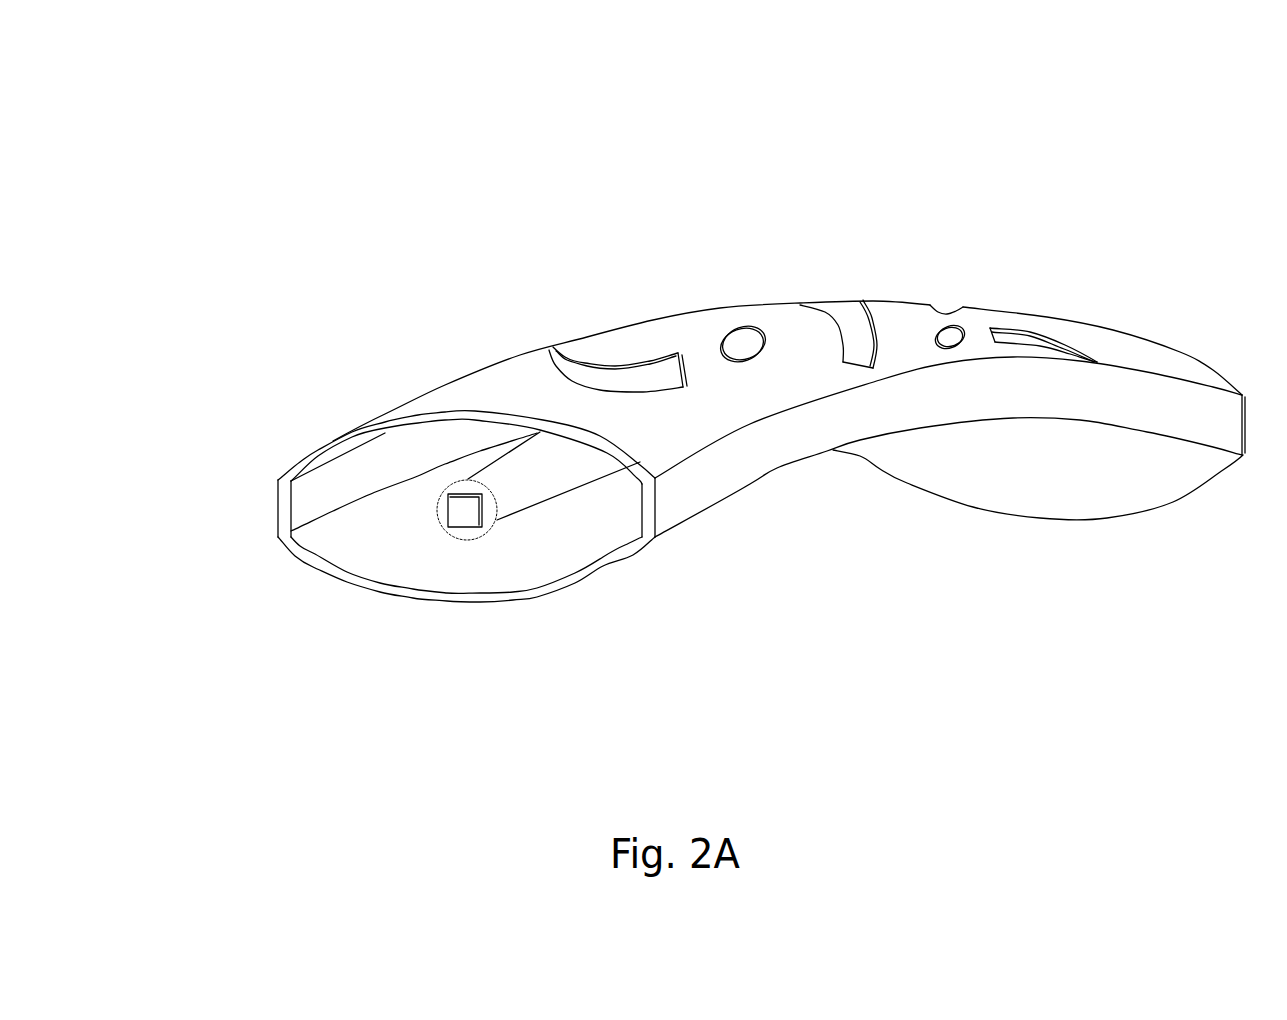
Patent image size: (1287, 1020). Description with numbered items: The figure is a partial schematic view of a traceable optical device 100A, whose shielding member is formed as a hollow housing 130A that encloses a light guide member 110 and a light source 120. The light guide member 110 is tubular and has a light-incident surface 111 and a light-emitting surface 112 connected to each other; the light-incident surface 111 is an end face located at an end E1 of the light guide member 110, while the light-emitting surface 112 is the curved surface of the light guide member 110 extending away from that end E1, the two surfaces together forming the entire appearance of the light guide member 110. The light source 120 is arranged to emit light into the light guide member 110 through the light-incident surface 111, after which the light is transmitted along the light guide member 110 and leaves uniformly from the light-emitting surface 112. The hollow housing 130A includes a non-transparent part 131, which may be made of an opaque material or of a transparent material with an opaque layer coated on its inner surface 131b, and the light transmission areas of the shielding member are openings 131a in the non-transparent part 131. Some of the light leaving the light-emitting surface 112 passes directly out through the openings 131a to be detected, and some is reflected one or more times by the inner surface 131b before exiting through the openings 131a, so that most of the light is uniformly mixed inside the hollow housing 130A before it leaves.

The traceable optical device 100A is at (236, 96).
The hollow housing 130A is at (296, 432).
The non-transparent part 131 is at (432, 396).
The openings 131a is at (551, 345).
The inner surface 131b is at (302, 503).
The light guide member 110 is at (577, 500).
The light-emitting surface 112 is at (522, 498).
The light source 120 is at (465, 515).
The light-incident surface 111 is at (480, 522).
The end E1 is at (425, 524).